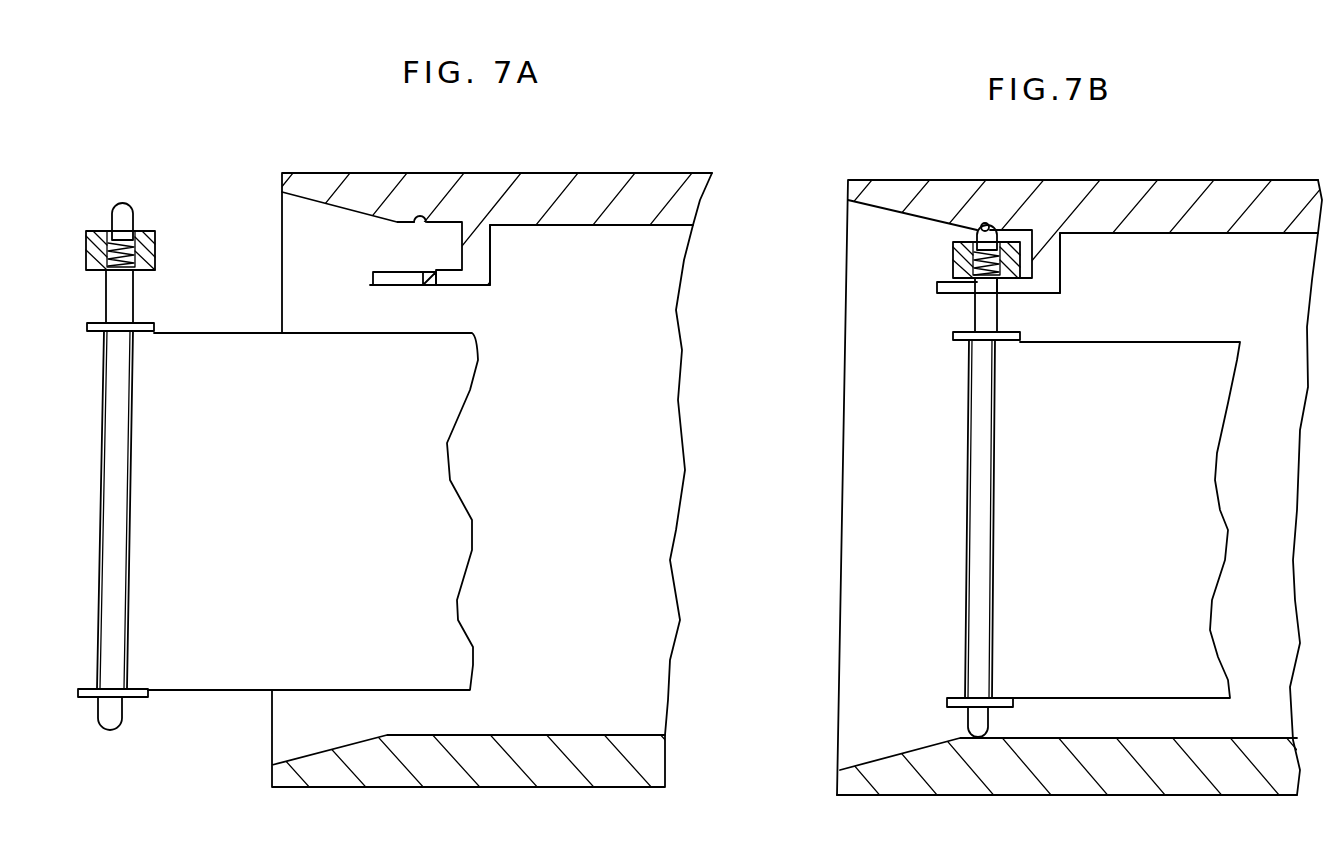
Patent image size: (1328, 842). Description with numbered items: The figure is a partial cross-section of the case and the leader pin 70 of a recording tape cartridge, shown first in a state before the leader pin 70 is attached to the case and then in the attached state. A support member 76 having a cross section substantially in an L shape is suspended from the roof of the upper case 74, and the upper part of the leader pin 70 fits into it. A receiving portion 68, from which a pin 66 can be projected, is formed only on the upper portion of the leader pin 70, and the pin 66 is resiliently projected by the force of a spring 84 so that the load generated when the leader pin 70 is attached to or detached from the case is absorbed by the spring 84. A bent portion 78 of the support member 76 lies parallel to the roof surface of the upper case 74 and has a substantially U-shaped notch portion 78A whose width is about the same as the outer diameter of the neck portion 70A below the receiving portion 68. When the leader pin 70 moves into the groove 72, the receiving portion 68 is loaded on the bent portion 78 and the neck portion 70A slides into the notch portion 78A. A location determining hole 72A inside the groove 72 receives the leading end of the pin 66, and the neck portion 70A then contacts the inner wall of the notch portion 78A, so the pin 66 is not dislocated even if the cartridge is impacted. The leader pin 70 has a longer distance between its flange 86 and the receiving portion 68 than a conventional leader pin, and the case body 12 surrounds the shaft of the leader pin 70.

In FIG. 7A, the body 12 is at (457, 535).
In FIG. 7B, the body 12 is at (1203, 486).
In FIG. 7A, the pin 66 is at (123, 212).
In FIG. 7B, the pin 66 is at (977, 237).
In FIG. 7A, the receiving portion 68 is at (152, 263).
In FIG. 7B, the receiving portion 68 is at (950, 271).
In FIG. 7A, the leader pin 70 is at (145, 451).
In FIG. 7B, the leader pin 70 is at (992, 474).
In FIG. 7A, the neck portion 70A is at (122, 301).
In FIG. 7B, the neck portion 70A is at (975, 310).
In FIG. 7A, the groove 72 is at (306, 200).
In FIG. 7B, the groove 72 is at (874, 199).
In FIG. 7A, the location determining hole 72A is at (422, 216).
In FIG. 7B, the location determining hole 72A is at (987, 222).
In FIG. 7A, the upper case 74 is at (563, 182).
In FIG. 7B, the upper case 74 is at (1007, 473).
In FIG. 7A, the support member 76 is at (503, 260).
In FIG. 7B, the support member 76 is at (1075, 257).
In FIG. 7A, the bent portion 78 is at (397, 286).
In FIG. 7B, the bent portion 78 is at (937, 290).
In FIG. 7A, the notch portion 78A is at (427, 286).
In FIG. 7A, the spring 84 is at (147, 248).
In FIG. 7B, the spring 84 is at (958, 258).
In FIG. 7A, the flange 86 is at (96, 333).
In FIG. 7B, the flange 86 is at (957, 340).